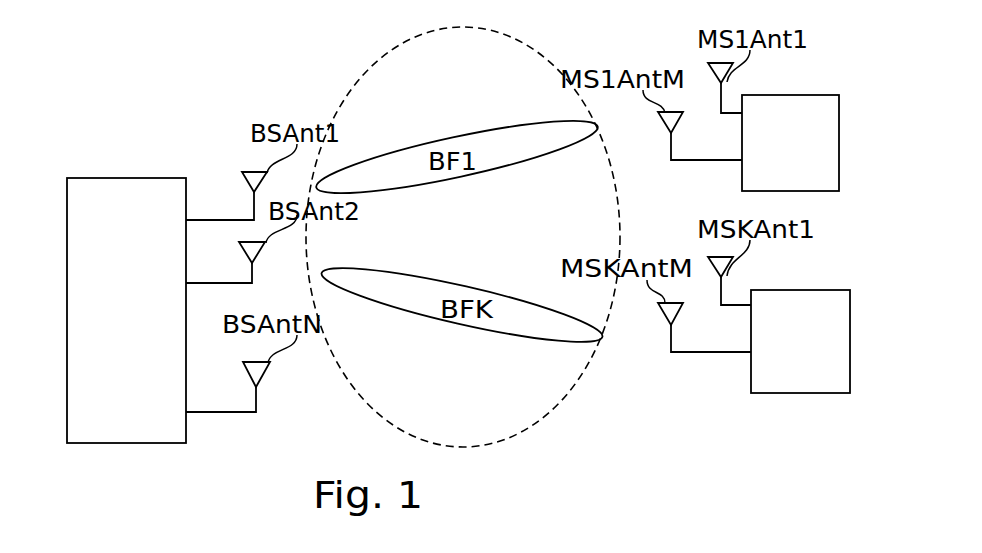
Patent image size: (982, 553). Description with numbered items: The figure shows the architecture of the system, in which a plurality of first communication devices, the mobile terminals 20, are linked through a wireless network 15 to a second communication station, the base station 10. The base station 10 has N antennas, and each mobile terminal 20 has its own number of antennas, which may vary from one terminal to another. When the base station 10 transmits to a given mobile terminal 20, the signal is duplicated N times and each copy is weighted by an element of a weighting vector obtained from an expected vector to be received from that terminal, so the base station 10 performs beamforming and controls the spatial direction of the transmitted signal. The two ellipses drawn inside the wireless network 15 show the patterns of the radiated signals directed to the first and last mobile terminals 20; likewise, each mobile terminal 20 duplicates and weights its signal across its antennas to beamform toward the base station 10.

The base station 10 is at (126, 310).
The wireless network 15 is at (465, 449).
The mobile terminals 20 is at (796, 244).